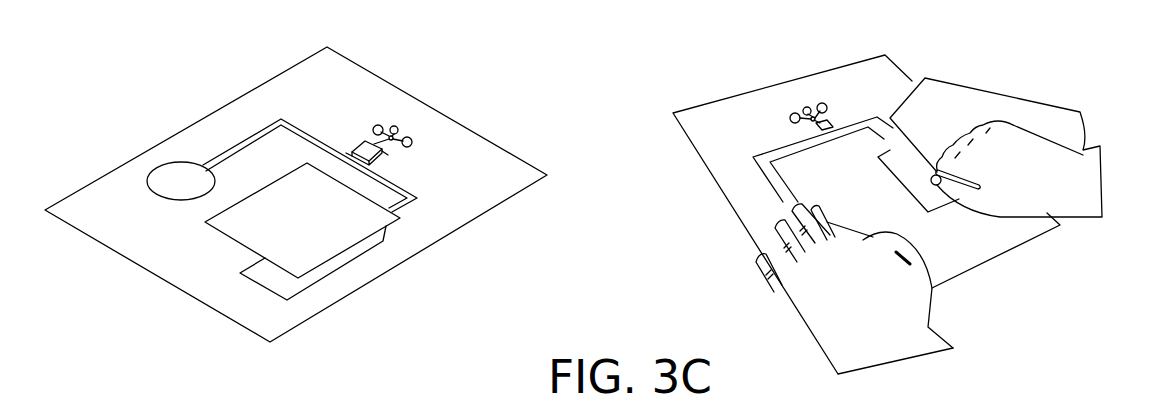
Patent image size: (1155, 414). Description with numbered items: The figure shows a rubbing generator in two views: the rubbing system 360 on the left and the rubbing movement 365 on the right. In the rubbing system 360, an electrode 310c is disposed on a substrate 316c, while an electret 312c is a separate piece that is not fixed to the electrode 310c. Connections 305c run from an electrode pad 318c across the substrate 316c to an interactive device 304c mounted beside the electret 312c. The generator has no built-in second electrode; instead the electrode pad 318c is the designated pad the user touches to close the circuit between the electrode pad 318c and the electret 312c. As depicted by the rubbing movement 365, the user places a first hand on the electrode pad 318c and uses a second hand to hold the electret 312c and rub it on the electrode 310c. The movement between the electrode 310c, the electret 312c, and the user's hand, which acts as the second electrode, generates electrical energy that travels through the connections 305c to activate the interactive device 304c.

The interactive device 304c is at (403, 119).
The connections 305c is at (268, 118).
The electrode 310c is at (246, 288).
The electret 312c is at (322, 226).
The substrate 316c is at (482, 202).
The electrode pad 318c is at (203, 190).
The rubbing system 360 is at (522, 66).
The rubbing movement 365 is at (1047, 60).